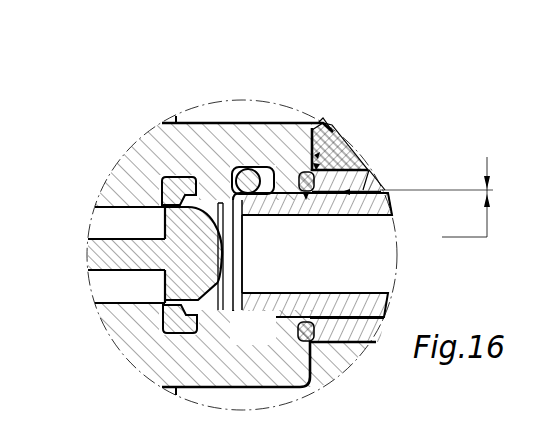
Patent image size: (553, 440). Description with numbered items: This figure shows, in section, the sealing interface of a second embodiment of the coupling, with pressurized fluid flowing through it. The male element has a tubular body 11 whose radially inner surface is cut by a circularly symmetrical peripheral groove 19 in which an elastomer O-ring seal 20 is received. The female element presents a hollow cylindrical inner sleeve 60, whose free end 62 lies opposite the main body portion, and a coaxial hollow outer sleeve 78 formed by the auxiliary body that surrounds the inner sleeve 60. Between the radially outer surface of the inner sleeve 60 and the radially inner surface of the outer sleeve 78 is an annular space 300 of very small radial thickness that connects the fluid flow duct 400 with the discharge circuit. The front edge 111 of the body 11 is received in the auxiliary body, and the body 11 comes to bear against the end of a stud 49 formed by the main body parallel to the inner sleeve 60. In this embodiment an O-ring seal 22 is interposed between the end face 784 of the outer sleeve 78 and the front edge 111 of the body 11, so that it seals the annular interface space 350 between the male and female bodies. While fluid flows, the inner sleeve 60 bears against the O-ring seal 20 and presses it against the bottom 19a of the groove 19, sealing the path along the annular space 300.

The tubular body 11 is at (233, 137).
The O-ring seal 20 is at (227, 173).
The front edge 111 is at (333, 130).
The stud 49 is at (337, 143).
The annular space 350 is at (333, 152).
The O-ring seal 22 is at (352, 182).
The annular space 300 is at (382, 189).
The end face 784 is at (180, 224).
The outer sleeve 78 is at (286, 254).
The end of the inner sleeve 62 is at (242, 310).
The fluid flow duct 400 is at (312, 255).
The inner sleeve 60 is at (366, 212).
The bottom of the groove 19a is at (190, 310).
The peripheral groove 19 is at (272, 318).